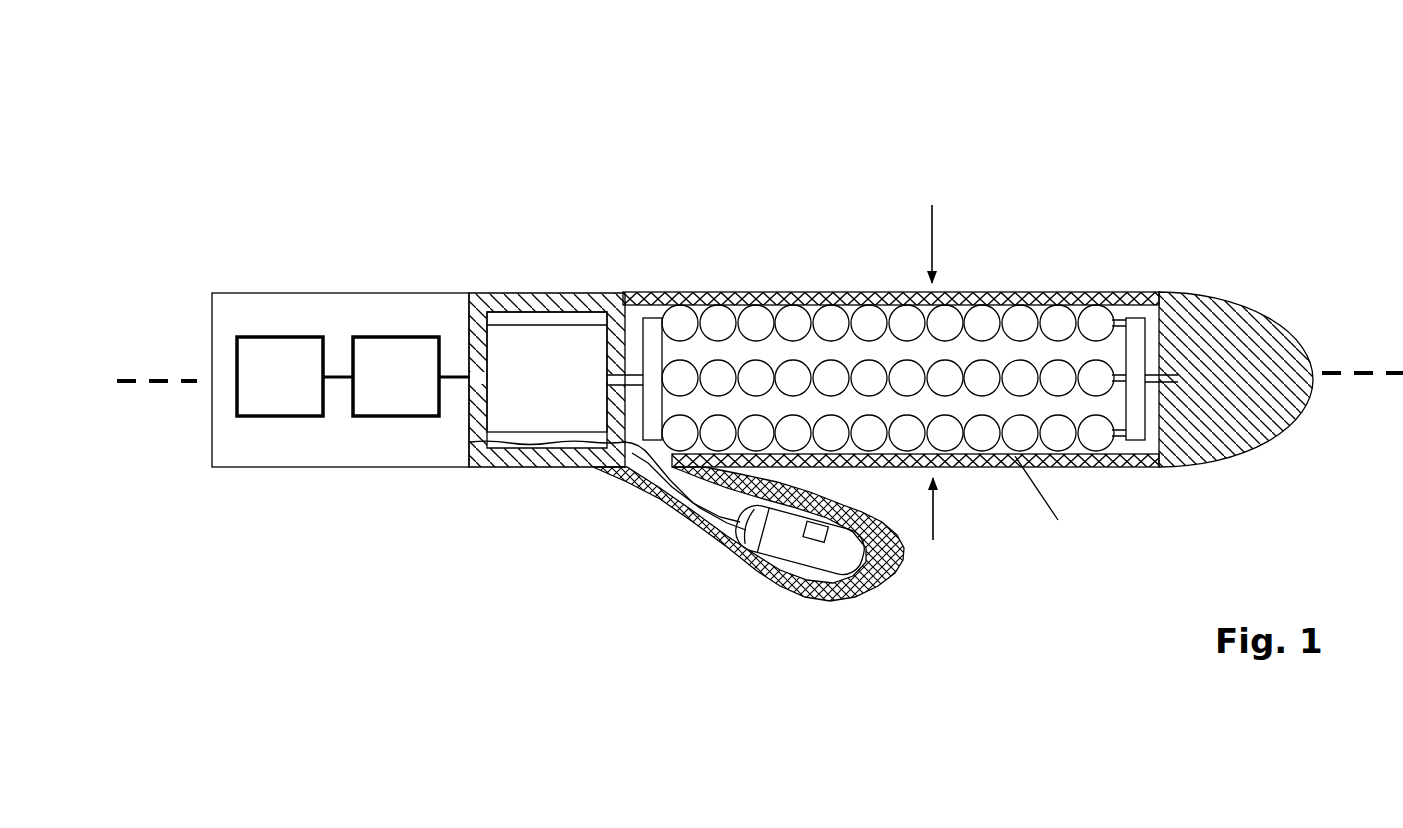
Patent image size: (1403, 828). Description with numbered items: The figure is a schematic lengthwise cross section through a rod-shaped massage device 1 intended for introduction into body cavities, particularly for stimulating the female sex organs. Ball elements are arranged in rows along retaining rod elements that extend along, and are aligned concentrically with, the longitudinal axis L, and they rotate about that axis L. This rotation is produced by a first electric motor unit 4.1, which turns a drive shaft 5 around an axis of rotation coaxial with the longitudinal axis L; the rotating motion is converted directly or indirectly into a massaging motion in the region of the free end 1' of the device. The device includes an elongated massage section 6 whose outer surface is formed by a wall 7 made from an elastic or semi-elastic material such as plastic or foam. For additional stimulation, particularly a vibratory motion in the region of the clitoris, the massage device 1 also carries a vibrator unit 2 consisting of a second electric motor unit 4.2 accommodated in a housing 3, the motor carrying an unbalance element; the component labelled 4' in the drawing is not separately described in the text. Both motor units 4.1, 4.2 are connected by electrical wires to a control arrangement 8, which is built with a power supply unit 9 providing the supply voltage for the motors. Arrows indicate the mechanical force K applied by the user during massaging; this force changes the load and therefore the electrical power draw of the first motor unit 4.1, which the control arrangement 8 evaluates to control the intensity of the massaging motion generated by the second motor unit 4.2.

The rod-shaped massage device 1 is at (629, 247).
The free end 1' is at (1236, 319).
The vibrator unit 2 is at (703, 572).
The housing 3 is at (707, 532).
The first electric motor unit 4.1 is at (521, 350).
The second electric motor unit 4.2 is at (787, 542).
The switch element 4' is at (871, 577).
The drive shaft 5 is at (623, 370).
The massage section 6 is at (815, 277).
The wall 7 is at (957, 290).
The control arrangement 8 is at (405, 376).
The power supply unit 9 is at (280, 376).
The mechanical force K is at (945, 364).
The longitudinal axis L is at (760, 396).